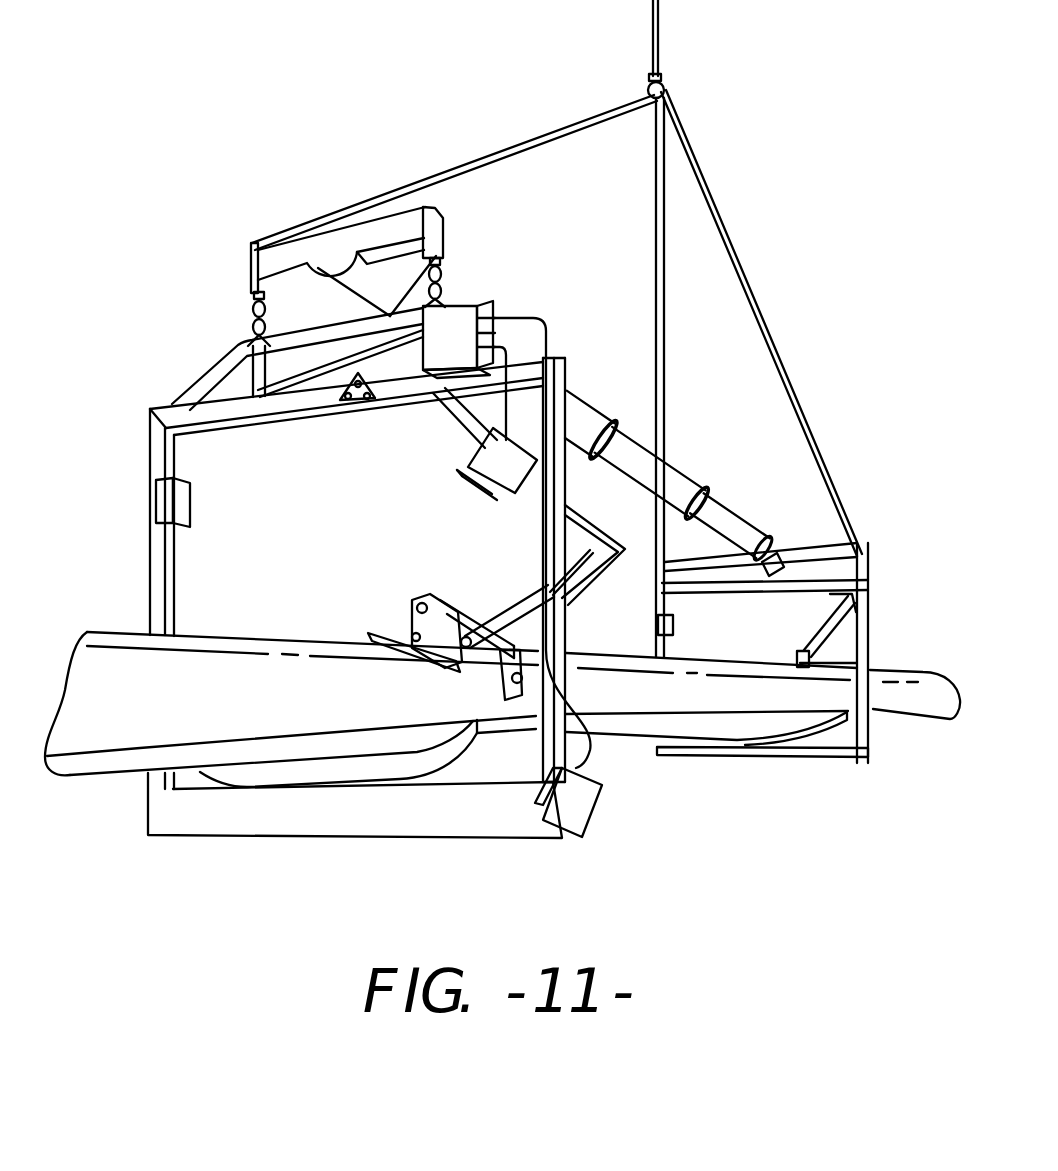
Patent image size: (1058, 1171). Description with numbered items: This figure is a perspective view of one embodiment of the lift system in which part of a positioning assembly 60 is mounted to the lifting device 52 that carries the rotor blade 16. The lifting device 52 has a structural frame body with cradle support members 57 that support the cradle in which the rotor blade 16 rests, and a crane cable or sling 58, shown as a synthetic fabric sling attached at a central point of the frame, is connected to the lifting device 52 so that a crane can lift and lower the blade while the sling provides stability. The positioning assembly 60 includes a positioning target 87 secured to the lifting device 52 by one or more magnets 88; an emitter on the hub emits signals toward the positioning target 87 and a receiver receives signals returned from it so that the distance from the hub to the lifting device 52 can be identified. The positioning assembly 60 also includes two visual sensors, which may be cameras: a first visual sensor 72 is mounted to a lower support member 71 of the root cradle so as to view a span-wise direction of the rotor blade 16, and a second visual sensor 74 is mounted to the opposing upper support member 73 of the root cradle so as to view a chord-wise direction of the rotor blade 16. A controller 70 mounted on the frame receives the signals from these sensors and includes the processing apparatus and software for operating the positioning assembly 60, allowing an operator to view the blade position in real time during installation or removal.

The rotor blade 16 is at (160, 722).
The lifting device 52 is at (212, 352).
The cradle support member 57 is at (570, 375).
The crane cable or sling 58 is at (730, 241).
The positioning assembly 60 is at (834, 270).
The controller 70 is at (490, 320).
The lower support member 71 is at (270, 818).
The first visual sensor 72 is at (582, 803).
The upper support member 73 is at (205, 413).
The second visual sensor 74 is at (510, 472).
The positioning target 87 is at (330, 397).
The magnets 88 is at (343, 401).